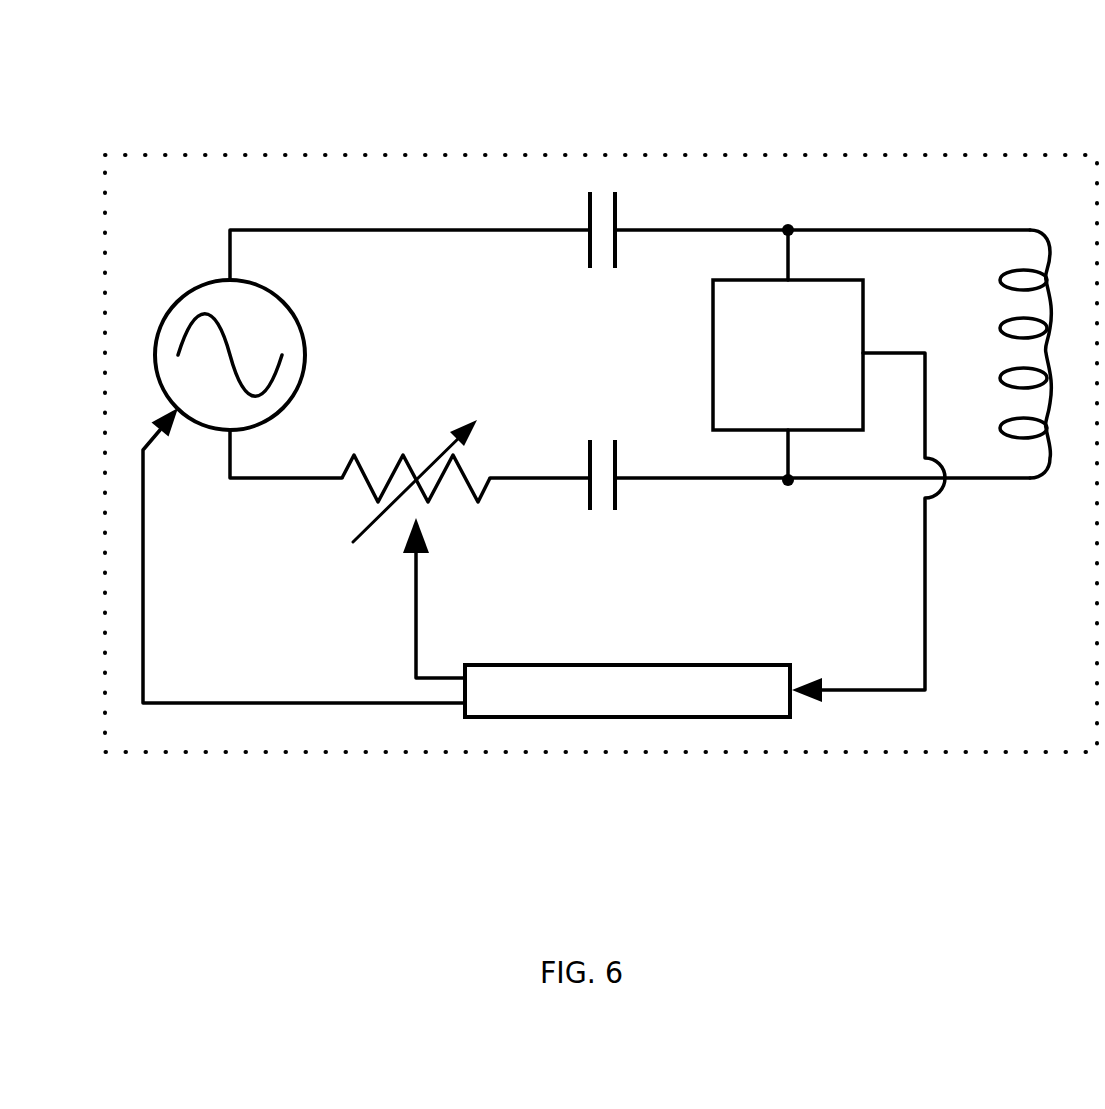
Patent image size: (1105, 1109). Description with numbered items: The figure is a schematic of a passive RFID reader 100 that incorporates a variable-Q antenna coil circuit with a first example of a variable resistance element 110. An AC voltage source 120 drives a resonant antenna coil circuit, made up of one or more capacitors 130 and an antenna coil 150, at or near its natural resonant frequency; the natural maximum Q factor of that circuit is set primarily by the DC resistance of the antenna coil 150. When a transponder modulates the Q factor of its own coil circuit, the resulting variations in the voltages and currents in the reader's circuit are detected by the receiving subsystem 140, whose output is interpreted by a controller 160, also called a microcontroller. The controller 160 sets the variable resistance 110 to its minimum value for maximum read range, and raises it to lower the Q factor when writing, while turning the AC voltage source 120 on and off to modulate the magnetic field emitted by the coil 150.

The passive RFID reader 100 is at (877, 760).
The variable resistance element 110 is at (378, 553).
The AC voltage source 120 is at (180, 282).
The capacitors 130 is at (602, 430).
The receiving subsystem 140 is at (823, 268).
The antenna coil 150 is at (1027, 505).
The controller 160 is at (600, 727).